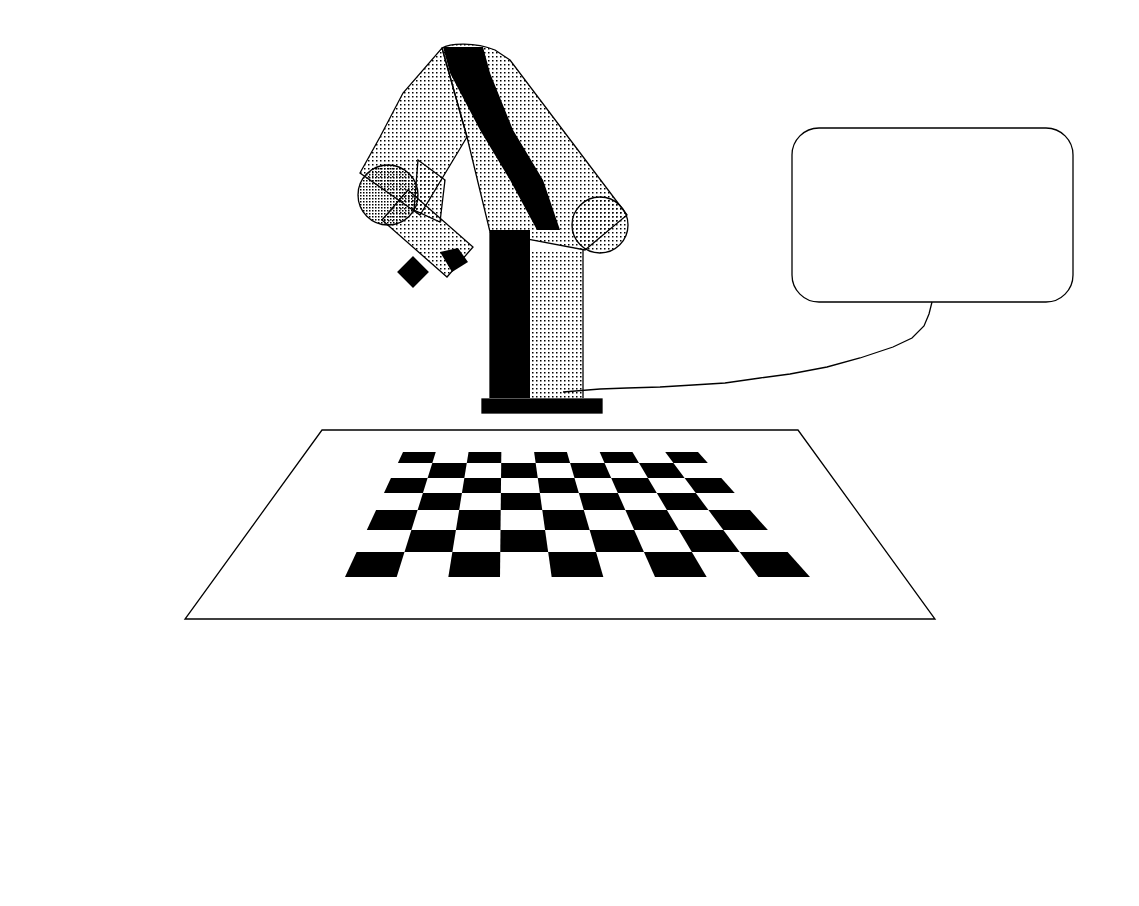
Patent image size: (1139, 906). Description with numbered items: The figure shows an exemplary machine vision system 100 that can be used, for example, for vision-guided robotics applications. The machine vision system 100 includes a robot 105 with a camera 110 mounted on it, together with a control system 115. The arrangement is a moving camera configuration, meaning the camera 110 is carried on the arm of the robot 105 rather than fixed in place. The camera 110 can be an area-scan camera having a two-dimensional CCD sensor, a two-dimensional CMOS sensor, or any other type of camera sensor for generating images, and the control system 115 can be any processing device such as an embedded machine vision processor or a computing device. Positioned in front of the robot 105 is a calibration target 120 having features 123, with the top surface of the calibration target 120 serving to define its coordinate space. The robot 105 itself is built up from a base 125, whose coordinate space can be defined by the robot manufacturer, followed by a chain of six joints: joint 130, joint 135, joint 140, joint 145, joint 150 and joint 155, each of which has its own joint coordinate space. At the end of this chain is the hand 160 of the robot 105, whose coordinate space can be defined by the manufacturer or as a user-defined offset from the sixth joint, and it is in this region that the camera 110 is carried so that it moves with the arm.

The machine vision system 100 is at (133, 94).
The robot 105 is at (548, 106).
The camera 110 is at (368, 247).
The control system 115 is at (916, 213).
The calibration target 120 is at (322, 567).
The features 123 is at (393, 507).
The base 125 is at (482, 410).
The joint 130 is at (507, 393).
The joint 135 is at (603, 220).
The joint 140 is at (512, 82).
The joint 145 is at (417, 148).
The joint 150 is at (387, 185).
The joint 155 is at (413, 227).
The hand 160 is at (443, 218).